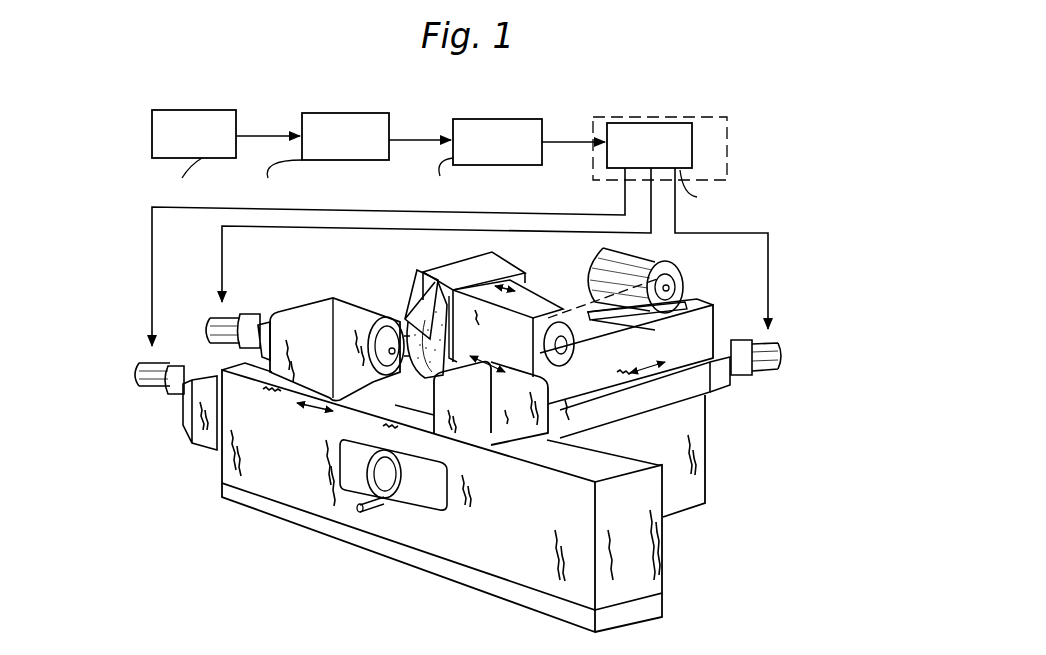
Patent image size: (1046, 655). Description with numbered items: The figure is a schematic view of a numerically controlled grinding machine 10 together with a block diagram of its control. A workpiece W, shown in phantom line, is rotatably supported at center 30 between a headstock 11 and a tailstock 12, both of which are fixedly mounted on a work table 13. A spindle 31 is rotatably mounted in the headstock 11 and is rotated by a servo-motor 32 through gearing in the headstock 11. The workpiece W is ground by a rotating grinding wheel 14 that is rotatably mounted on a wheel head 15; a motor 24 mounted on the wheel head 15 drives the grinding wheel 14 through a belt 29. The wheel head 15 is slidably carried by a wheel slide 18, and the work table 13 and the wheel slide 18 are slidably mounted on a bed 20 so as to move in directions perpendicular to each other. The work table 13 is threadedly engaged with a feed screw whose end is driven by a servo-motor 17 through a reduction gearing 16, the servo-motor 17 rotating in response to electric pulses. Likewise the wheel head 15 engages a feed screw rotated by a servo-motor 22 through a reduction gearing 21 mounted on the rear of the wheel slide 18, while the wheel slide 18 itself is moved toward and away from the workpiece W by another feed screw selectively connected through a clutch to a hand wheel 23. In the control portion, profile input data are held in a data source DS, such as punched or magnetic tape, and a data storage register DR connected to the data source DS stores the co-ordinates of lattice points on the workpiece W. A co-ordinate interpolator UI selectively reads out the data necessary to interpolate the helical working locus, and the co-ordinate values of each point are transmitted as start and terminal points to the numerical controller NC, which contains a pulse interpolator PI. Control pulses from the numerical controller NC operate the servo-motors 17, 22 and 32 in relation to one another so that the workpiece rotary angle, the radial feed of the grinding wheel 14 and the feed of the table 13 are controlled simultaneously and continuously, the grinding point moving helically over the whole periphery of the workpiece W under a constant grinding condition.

The data source DS is at (233, 96).
The data storage register DR is at (350, 113).
The co-ordinate interpolator UI is at (503, 119).
The pulse interpolator PI is at (650, 123).
The numerical controller NC is at (733, 140).
The numerically controlled grinding machine 10 is at (556, 262).
The headstock 11 is at (320, 302).
The tailstock 12 is at (497, 363).
The work table 13 is at (272, 512).
The grinding wheel 14 is at (403, 290).
The wheel head 15 is at (558, 322).
The reduction gearing 16 is at (213, 450).
The servo-motor 17 is at (150, 404).
The wheel slide 18 is at (726, 443).
The bed 20 is at (480, 560).
The reduction gearing 21 is at (723, 388).
The servo-motor 22 is at (766, 375).
The hand wheel 23 is at (385, 510).
The motor 24 is at (660, 253).
The belt 29 is at (648, 322).
The center 30 is at (396, 318).
The spindle 31 is at (367, 325).
The servo-motor 32 is at (238, 306).
The workpiece W is at (413, 352).